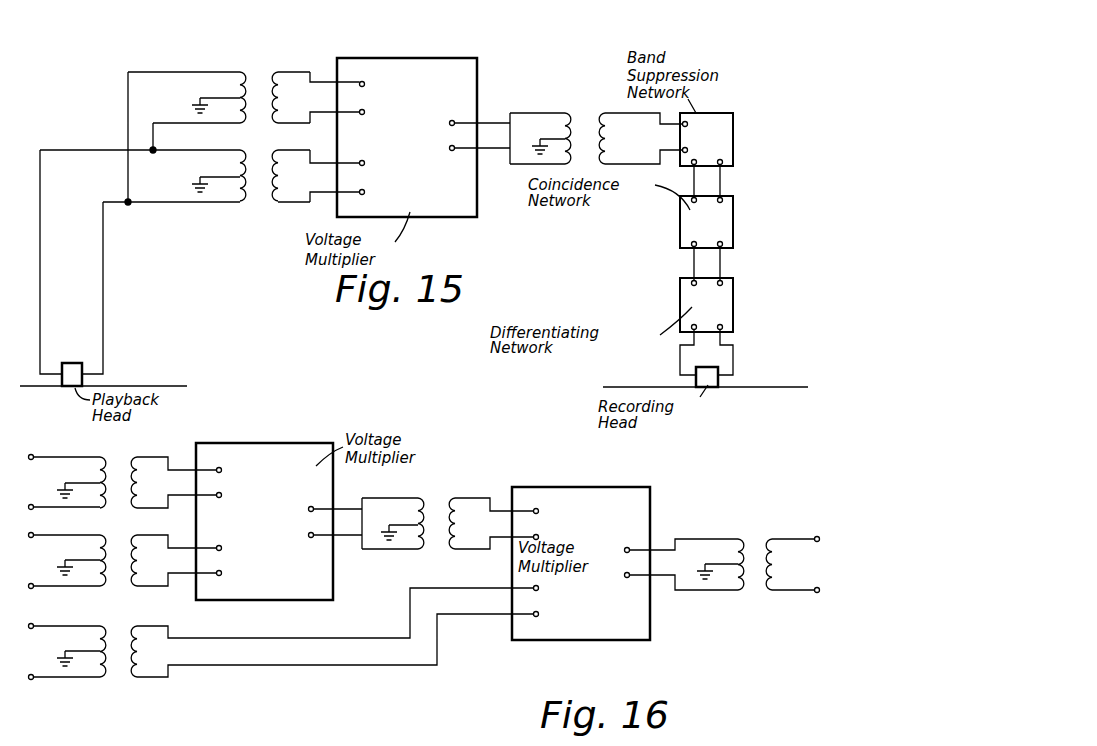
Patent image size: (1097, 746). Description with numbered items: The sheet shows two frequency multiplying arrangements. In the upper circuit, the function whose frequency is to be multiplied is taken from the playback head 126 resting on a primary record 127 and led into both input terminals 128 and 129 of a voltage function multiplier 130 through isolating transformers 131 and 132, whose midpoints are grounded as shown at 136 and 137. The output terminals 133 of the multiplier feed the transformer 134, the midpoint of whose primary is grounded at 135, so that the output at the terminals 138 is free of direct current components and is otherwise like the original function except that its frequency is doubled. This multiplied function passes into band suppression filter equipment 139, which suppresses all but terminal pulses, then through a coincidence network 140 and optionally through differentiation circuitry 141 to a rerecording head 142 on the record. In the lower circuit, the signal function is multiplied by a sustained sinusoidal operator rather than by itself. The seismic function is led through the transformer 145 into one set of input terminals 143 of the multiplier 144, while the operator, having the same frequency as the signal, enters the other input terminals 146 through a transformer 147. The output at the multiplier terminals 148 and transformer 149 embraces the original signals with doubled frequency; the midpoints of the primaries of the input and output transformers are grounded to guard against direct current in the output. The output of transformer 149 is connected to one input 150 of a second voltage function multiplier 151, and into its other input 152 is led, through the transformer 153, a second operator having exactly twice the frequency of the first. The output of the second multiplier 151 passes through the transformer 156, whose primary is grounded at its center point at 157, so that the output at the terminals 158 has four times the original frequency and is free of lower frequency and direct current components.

In FIG. 15, the playback head 126 is at (72, 378).
In FIG. 15, the primary record 127 is at (148, 384).
In FIG. 15, the input terminals 128 is at (370, 97).
In FIG. 15, the input terminals 129 is at (367, 180).
In FIG. 15, the voltage function multiplier 130 is at (455, 58).
In FIG. 15, the transformer 131 is at (275, 60).
In FIG. 15, the transformer 132 is at (272, 227).
In FIG. 15, the output terminals 133 is at (450, 134).
In FIG. 15, the transformer 134 is at (596, 116).
In FIG. 15, the ground connection 135 is at (536, 146).
In FIG. 15, the ground connection 136 is at (200, 97).
In FIG. 15, the ground connection 137 is at (190, 190).
In FIG. 15, the output terminals 138 is at (640, 138).
In FIG. 15, the filter equipment 139 is at (718, 137).
In FIG. 15, the coincidence network 140 is at (717, 222).
In FIG. 15, the differentiation circuitry 141 is at (718, 305).
In FIG. 15, the rerecording head 142 is at (707, 372).
In FIG. 16, the input terminals 143 is at (215, 483).
In FIG. 16, the multiplier 144 is at (312, 442).
In FIG. 16, the transformer 145 is at (135, 447).
In FIG. 16, the input terminals 146 is at (222, 560).
In FIG. 16, the transformer 147 is at (117, 578).
In FIG. 16, the multiplier terminals 148 is at (306, 517).
In FIG. 16, the transformer 149 is at (450, 492).
In FIG. 16, the input 150 is at (538, 521).
In FIG. 16, the second voltage function multiplier 151 is at (622, 487).
In FIG. 16, the input 152 is at (543, 601).
In FIG. 16, the transformer 153 is at (117, 675).
In FIG. 16, the transformer 156 is at (775, 532).
In FIG. 16, the ground connection 157 is at (705, 572).
In FIG. 16, the output terminals 158 is at (815, 562).